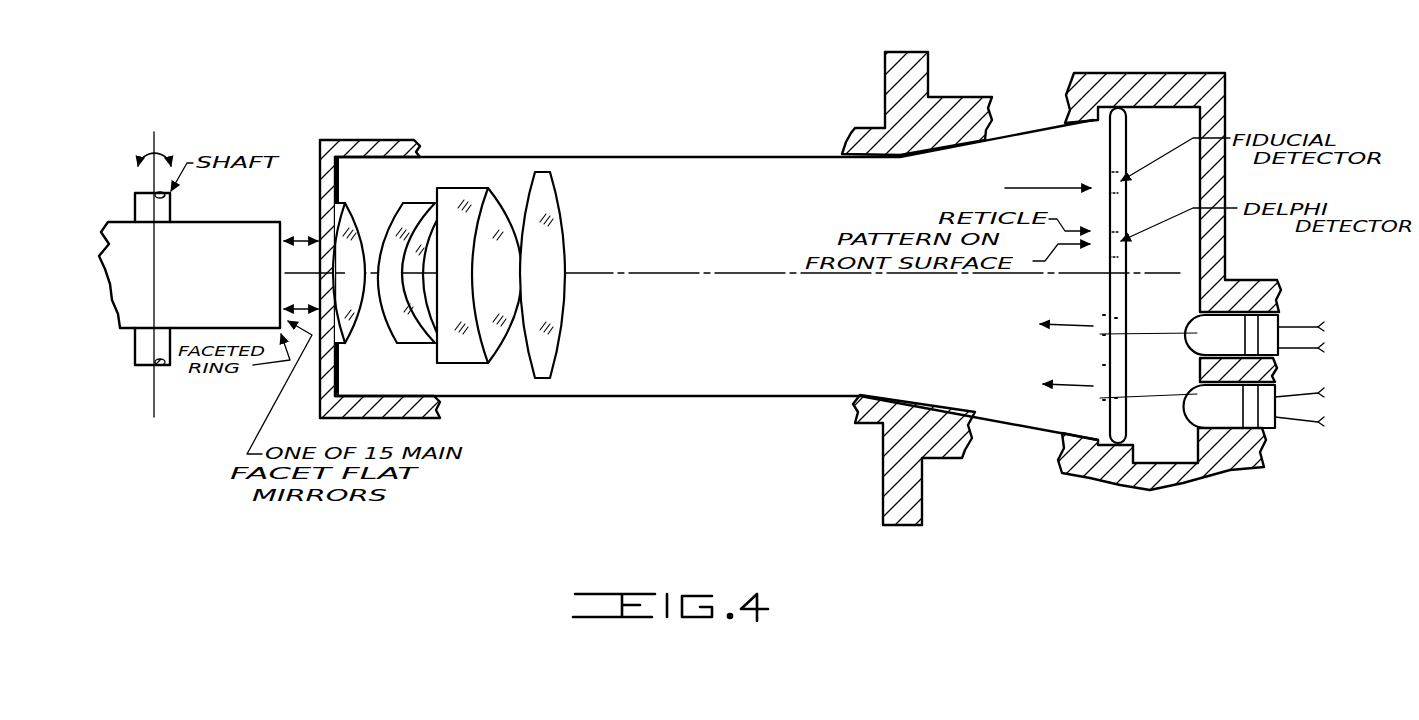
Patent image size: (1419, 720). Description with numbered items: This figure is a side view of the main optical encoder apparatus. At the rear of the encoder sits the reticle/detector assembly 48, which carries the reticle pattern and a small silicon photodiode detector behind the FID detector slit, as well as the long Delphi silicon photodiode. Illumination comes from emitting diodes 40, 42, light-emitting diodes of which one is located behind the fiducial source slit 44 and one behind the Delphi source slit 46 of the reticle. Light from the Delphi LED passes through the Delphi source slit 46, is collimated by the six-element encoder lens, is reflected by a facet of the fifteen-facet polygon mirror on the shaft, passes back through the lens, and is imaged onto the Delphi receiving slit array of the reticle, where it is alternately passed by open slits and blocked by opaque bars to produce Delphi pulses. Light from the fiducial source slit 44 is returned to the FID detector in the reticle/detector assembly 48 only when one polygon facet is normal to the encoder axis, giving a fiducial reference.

The emitting diode 40 is at (1228, 423).
The emitting diode 42 is at (1230, 328).
The fiducial source slit 44 is at (1100, 398).
The Delphi source slit 46 is at (1100, 334).
The reticle/detector assembly 48 is at (1097, 289).